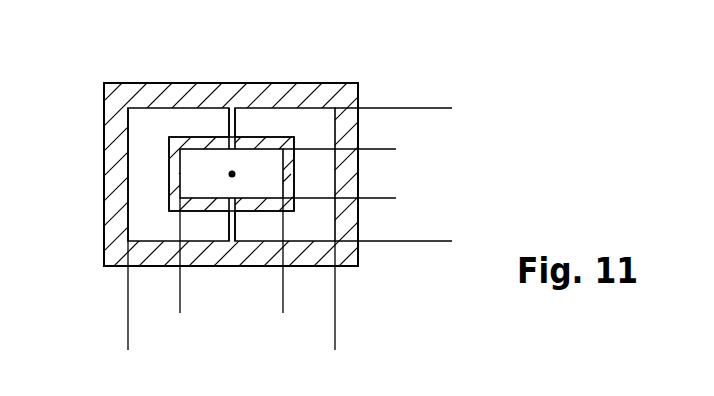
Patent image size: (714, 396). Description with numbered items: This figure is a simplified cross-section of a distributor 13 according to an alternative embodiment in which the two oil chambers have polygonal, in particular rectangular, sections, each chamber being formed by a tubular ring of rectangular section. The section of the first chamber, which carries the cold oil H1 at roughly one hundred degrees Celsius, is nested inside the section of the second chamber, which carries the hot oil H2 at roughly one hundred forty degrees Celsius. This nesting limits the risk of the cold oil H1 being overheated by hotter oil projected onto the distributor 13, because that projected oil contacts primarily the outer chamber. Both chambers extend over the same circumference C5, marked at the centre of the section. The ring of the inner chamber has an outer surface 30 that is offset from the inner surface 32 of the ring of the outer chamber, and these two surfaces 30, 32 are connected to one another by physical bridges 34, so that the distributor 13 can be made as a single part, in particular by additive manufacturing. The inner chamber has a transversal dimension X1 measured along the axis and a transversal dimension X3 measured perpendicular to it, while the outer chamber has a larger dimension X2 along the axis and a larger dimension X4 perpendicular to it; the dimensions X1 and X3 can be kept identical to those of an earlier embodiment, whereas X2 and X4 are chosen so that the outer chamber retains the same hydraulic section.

The distributor 13 is at (386, 88).
The physical bridge 34 is at (229, 124).
The hot oil H2 is at (257, 124).
The outer surface 30 is at (169, 178).
The cold oil H1 is at (184, 163).
The circumference C5 is at (235, 174).
The inner surface 32 is at (131, 190).
The transversal dimension X1 is at (283, 305).
The transversal dimension X2 is at (334, 343).
The transversal dimension X3 is at (387, 149).
The transversal dimension X4 is at (443, 108).